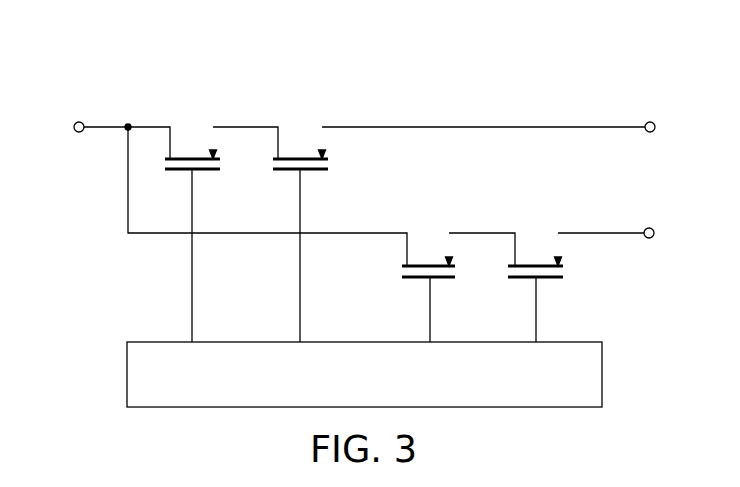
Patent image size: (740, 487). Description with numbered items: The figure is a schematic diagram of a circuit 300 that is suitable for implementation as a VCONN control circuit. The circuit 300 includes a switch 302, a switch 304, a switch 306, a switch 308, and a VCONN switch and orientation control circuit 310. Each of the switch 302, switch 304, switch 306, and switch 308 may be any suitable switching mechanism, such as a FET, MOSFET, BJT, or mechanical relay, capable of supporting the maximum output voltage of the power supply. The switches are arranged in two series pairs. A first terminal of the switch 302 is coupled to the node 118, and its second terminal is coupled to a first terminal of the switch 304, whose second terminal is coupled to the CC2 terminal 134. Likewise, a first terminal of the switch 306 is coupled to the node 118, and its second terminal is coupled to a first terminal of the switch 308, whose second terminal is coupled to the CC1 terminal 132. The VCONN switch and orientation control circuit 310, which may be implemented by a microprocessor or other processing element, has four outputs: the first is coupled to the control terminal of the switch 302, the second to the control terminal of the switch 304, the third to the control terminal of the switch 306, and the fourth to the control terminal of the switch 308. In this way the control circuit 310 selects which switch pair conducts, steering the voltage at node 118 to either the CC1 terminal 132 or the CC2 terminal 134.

The circuit 300 is at (476, 77).
The node 118 is at (77, 122).
The CC2 terminal 134 is at (653, 122).
The CC1 terminal 132 is at (652, 228).
The switch 302 is at (175, 173).
The switch 304 is at (285, 175).
The switch 306 is at (443, 280).
The switch 308 is at (550, 280).
The VCONN switch and orientation control circuit 310 is at (127, 374).